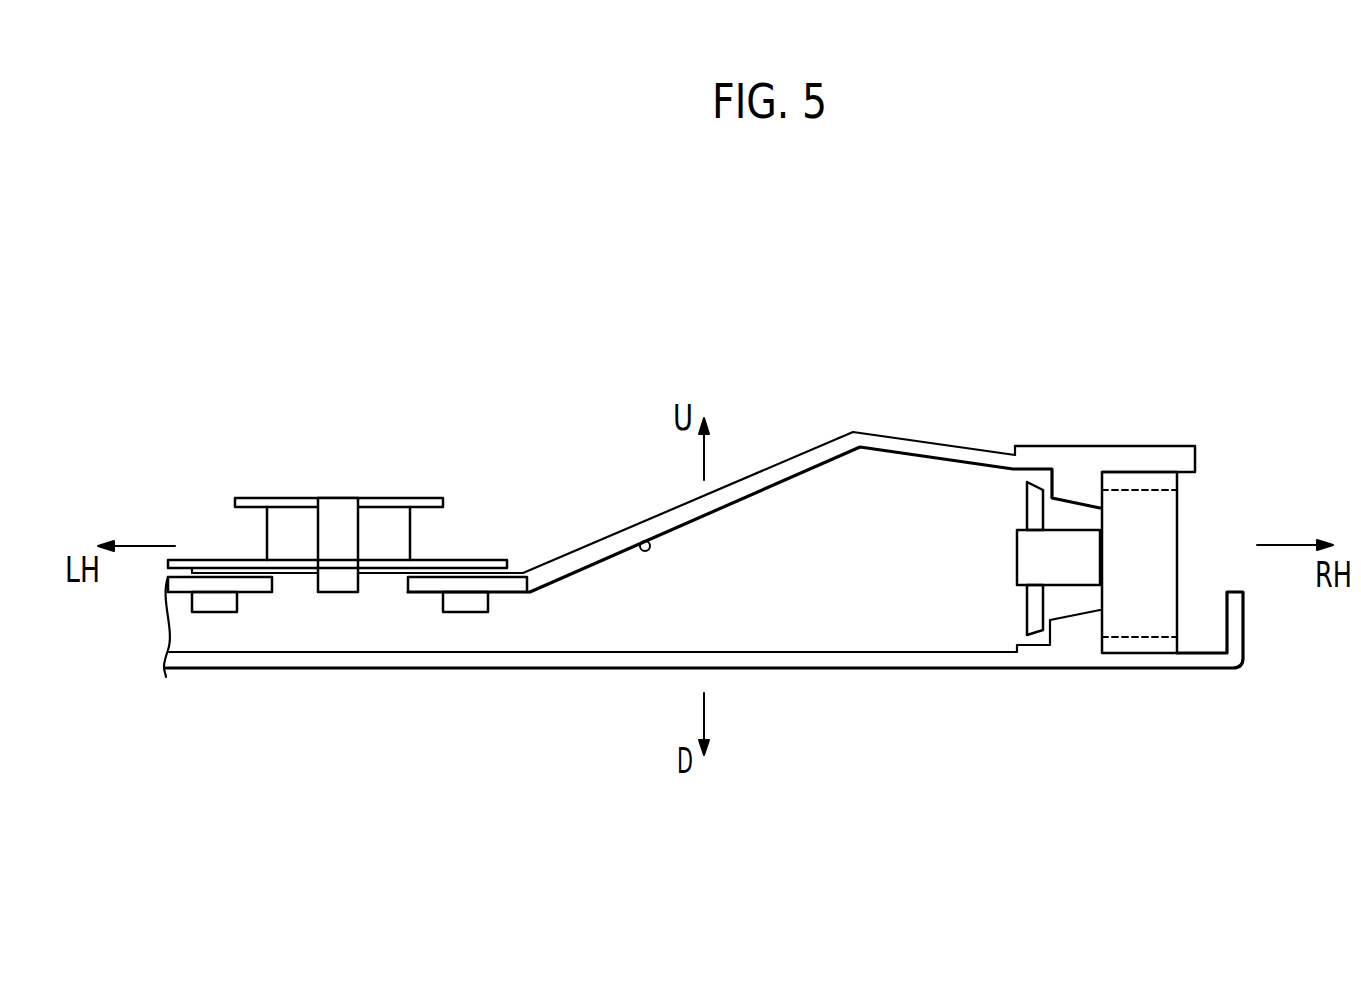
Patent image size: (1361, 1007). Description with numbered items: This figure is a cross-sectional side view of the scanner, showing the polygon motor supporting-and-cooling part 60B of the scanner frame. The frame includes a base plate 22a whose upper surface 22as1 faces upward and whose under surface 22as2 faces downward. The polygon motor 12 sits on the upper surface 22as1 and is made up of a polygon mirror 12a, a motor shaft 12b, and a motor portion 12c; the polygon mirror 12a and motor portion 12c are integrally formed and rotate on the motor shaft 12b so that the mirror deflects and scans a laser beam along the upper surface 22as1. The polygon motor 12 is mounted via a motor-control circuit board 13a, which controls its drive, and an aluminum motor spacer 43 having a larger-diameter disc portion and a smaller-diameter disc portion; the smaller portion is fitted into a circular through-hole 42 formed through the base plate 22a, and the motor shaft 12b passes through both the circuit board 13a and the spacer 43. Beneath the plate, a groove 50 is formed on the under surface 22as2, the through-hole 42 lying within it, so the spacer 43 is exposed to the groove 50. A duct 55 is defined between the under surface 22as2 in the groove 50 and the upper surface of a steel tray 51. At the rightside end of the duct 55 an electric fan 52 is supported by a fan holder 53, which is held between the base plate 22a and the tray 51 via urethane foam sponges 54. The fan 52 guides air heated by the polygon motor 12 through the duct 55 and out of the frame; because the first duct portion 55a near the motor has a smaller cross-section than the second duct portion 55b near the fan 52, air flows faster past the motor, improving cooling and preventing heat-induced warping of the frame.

The polygon motor supporting-and-cooling part 60B is at (817, 322).
The base plate 22a is at (890, 438).
The upper surface 22as1 is at (797, 453).
The under surface 22as2 is at (797, 477).
The groove 50 is at (645, 540).
The polygon motor 12 is at (345, 475).
The polygon mirror 12a is at (432, 497).
The motor shaft 12b is at (343, 585).
The motor portion 12c is at (267, 530).
The motor-control circuit board 13a is at (463, 558).
The circular through-hole 42 is at (390, 605).
The motor spacer 43 is at (295, 583).
The duct 55 is at (605, 638).
The first duct portion 55a is at (258, 633).
The second duct portion 55b is at (860, 610).
The tray 51 is at (922, 672).
The fan 52 is at (1025, 500).
The fan holder 53 is at (1165, 510).
The sponges 54 is at (1165, 480).